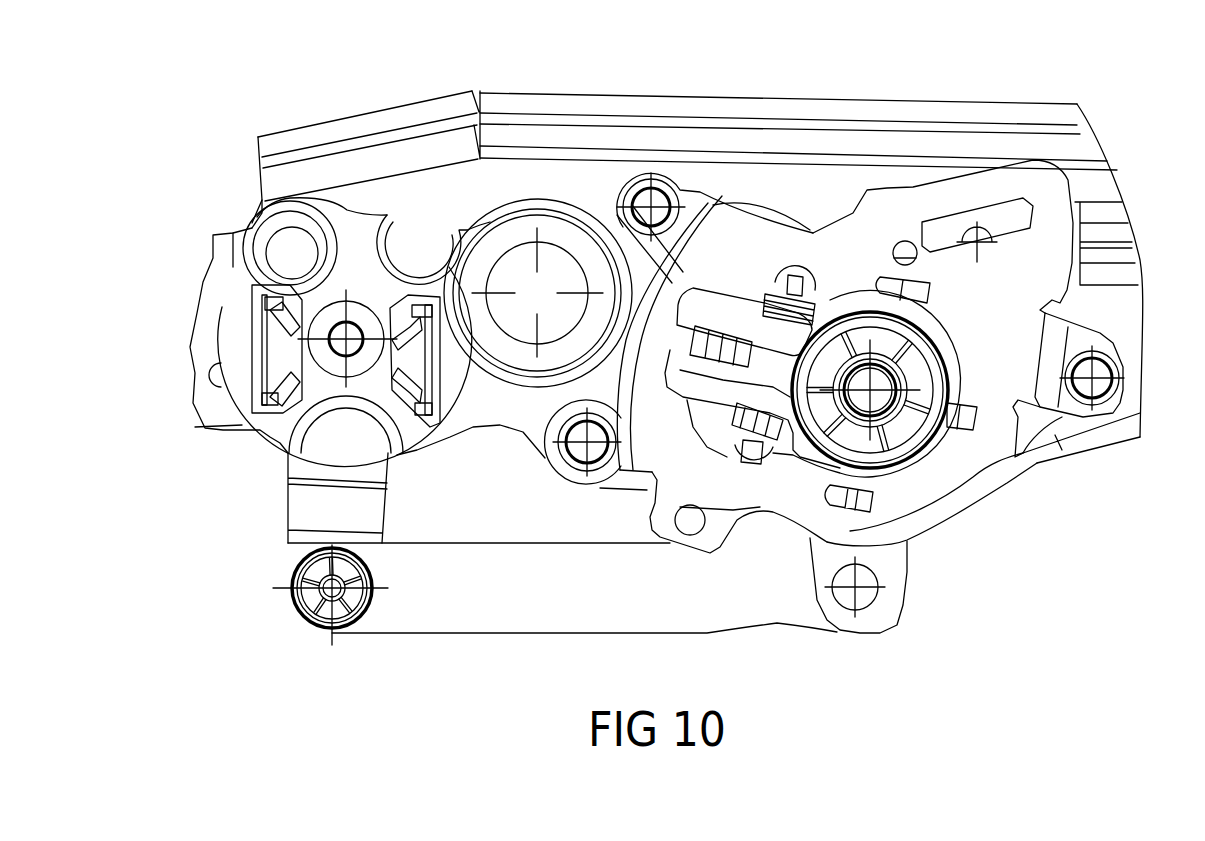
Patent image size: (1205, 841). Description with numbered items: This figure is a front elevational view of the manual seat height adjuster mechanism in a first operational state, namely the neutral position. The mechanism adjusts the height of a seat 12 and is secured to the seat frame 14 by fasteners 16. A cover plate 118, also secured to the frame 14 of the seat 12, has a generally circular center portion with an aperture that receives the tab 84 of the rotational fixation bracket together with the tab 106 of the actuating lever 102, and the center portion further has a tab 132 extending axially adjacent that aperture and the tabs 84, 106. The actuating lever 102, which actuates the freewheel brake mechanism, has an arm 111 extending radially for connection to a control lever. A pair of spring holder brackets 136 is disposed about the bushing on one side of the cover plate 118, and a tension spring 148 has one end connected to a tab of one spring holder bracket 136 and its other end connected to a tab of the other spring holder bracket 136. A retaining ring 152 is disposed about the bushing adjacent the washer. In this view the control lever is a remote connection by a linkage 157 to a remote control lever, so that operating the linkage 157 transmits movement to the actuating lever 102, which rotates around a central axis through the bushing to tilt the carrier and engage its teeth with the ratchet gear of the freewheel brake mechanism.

The seat 12 is at (1016, 100).
The seat frame 14 is at (578, 163).
The fasteners 16 is at (649, 180).
The tab 84 is at (705, 345).
The actuating lever 102 is at (923, 543).
The tab 106 is at (672, 402).
The arm 111 is at (888, 583).
The cover plate 118 is at (838, 232).
The tab 132 is at (653, 522).
The spring holder brackets 136 is at (710, 305).
The tension spring 148 is at (777, 272).
The retaining ring 152 is at (908, 430).
The linkage 157 is at (420, 617).